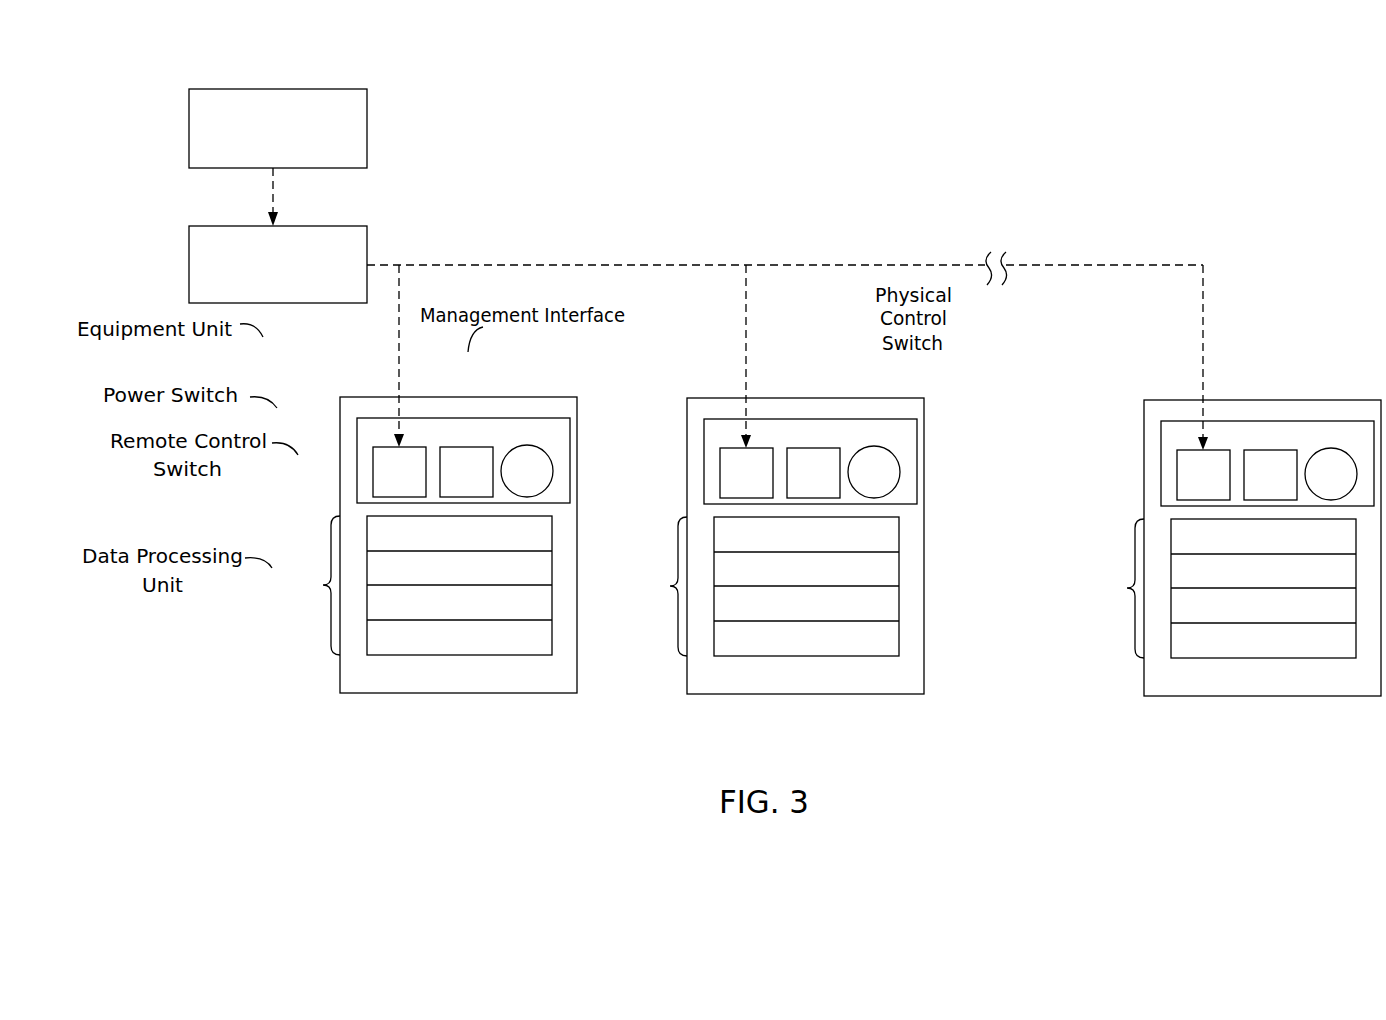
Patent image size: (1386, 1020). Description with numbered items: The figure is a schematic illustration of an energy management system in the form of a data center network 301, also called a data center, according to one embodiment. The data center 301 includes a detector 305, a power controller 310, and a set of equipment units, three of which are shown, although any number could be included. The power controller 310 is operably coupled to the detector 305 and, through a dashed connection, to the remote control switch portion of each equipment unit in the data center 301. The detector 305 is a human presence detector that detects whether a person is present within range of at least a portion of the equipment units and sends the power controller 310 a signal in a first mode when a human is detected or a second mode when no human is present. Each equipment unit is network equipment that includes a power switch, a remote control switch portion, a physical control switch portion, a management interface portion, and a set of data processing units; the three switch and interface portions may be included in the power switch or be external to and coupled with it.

The data center network 301 is at (1163, 110).
The detector 305 is at (298, 154).
The power controller 310 is at (298, 289).